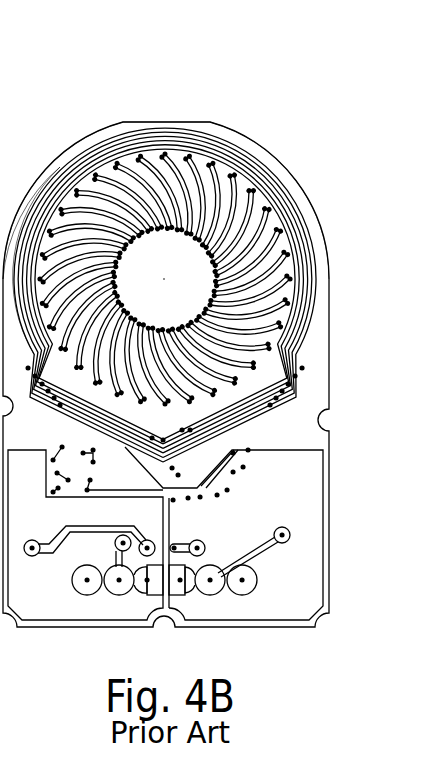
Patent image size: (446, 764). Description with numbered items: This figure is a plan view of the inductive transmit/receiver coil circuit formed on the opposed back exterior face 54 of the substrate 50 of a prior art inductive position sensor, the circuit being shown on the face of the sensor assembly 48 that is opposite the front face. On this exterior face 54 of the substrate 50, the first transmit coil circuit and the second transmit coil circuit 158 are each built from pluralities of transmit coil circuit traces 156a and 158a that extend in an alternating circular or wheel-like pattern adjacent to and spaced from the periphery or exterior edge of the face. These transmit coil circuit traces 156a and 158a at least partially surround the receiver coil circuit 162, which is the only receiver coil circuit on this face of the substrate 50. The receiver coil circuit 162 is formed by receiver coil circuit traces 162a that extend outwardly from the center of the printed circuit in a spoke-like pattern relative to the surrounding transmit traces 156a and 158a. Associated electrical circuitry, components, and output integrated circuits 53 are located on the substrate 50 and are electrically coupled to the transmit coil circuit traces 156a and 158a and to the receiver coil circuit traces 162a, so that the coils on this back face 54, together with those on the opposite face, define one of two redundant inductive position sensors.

The sensor assembly 48 is at (58, 167).
The substrate 50 is at (70, 628).
The electrical circuitry, components, and output integrated circuits 53 is at (270, 533).
The opposed exterior face 54 is at (310, 387).
The transmit coil circuit traces 156a is at (104, 143).
The second transmit coil circuit 158 is at (30, 191).
The transmit coil circuit traces 158a is at (147, 142).
The receiver coil circuit 162 is at (267, 250).
The receiver coil circuit traces 162a is at (270, 222).